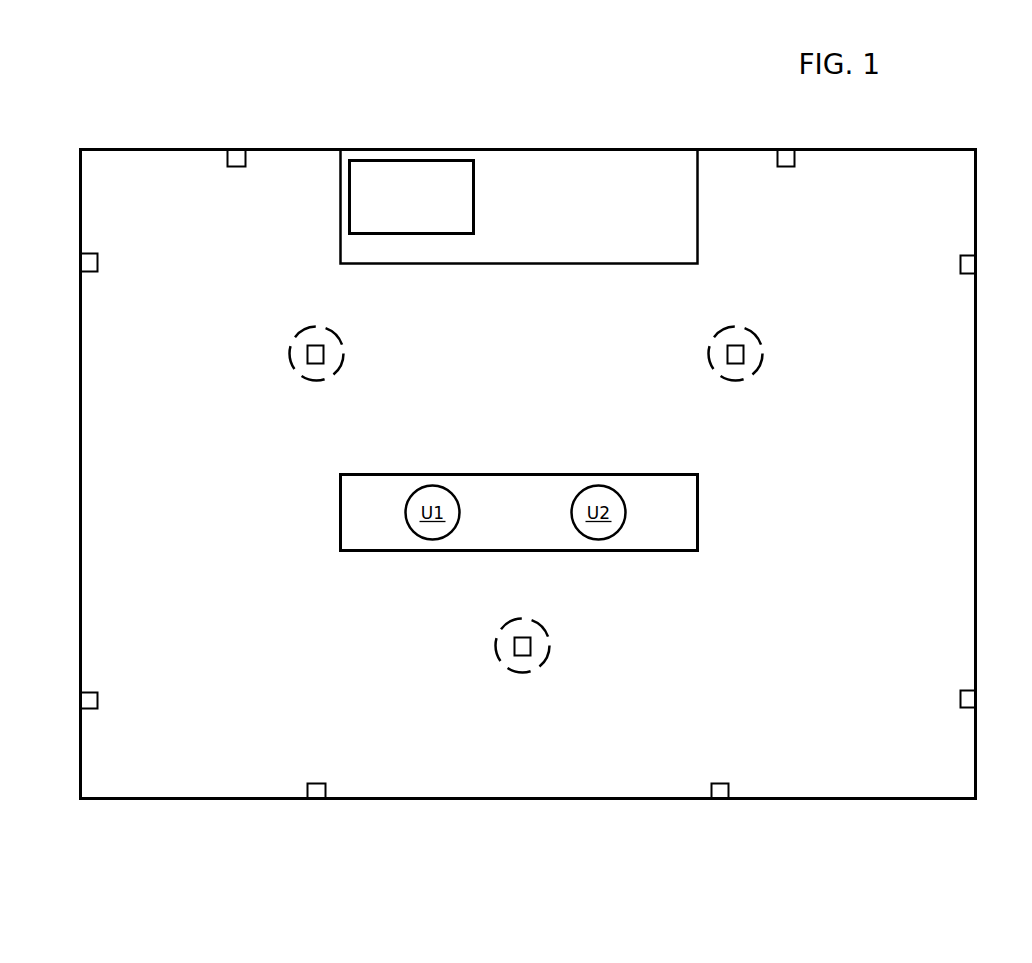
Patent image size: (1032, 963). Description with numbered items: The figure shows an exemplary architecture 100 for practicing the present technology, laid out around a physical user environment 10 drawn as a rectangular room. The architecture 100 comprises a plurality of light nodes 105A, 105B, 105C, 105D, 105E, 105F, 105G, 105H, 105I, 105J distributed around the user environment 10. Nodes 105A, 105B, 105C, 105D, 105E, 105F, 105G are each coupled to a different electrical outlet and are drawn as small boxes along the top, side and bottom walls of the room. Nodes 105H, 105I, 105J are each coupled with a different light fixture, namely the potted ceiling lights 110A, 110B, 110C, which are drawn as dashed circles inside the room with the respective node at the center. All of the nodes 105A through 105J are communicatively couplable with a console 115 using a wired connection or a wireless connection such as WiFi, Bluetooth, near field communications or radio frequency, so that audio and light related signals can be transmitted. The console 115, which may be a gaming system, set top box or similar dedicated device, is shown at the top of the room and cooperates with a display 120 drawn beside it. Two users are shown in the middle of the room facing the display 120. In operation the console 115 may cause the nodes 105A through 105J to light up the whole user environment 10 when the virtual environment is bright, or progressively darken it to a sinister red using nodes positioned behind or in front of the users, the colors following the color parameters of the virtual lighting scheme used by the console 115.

The exemplary architecture 100 is at (168, 107).
The user environment 10 is at (868, 531).
The light node 105A is at (787, 157).
The light node 105B is at (966, 264).
The light node 105C is at (966, 699).
The light node 105D is at (720, 791).
The light node 105E is at (316, 791).
The light node 105F is at (88, 262).
The light node 105G is at (238, 157).
The light node 105H is at (315, 356).
The light node 105I is at (735, 356).
The light node 105J is at (522, 648).
The potted ceiling light 110A is at (343, 353).
The potted ceiling light 110B is at (762, 353).
The potted ceiling light 110C is at (549, 645).
The console 115 is at (395, 218).
The display 120 is at (502, 228).